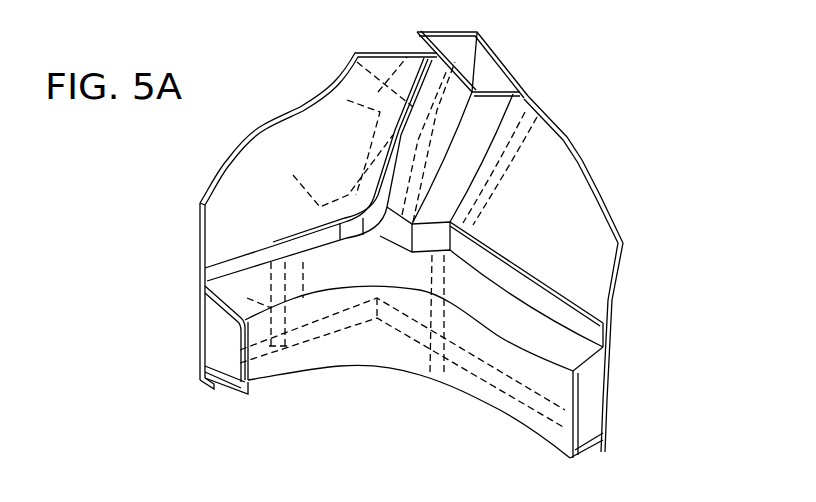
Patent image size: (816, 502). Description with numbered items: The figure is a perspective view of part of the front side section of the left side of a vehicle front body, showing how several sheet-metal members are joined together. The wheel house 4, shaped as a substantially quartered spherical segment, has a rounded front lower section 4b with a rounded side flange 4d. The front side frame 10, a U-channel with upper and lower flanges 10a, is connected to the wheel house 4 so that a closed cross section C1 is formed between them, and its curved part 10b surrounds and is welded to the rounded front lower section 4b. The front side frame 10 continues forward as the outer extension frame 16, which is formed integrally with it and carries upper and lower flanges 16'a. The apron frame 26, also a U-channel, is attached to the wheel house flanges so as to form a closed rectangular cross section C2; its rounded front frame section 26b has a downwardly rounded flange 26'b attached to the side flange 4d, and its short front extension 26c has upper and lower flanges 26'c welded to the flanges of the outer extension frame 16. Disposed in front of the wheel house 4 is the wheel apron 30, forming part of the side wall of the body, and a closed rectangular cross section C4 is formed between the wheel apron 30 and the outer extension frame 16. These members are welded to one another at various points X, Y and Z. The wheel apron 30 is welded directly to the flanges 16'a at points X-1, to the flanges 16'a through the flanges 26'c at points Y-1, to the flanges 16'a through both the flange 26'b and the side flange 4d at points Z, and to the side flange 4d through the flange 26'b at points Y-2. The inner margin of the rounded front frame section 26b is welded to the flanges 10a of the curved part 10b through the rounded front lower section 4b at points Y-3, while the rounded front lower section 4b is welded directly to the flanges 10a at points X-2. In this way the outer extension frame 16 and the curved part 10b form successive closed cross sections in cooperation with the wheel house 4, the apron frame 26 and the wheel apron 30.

The wheel house 4 is at (573, 203).
The rounded front lower section 4b is at (575, 280).
The rounded side flange 4d is at (423, 107).
The front side frame 10 is at (537, 445).
The upper and lower flanges 10a is at (603, 323).
The curved part 10b is at (508, 412).
The outer extension frame 16 is at (389, 372).
The upper and lower flanges 16'a is at (180, 320).
The apron frame 26 is at (352, 135).
The front frame section 26b is at (347, 100).
The flange 26'b is at (350, 68).
The short front extension 26c is at (329, 171).
The upper and lower flanges 26'c is at (306, 342).
The wheel apron 30 is at (193, 252).
The closed cross section C1 is at (603, 410).
The closed rectangular cross section C2 is at (485, 75).
The closed rectangular cross section C4 is at (222, 337).
The welding points X is at (251, 295).
The welding points X-1 is at (250, 262).
The welding points X-2 is at (528, 300).
The welding points Y-1 is at (300, 240).
The welding points Y-2 is at (398, 132).
The welding points Y-3 is at (460, 232).
The welding points Z is at (357, 215).